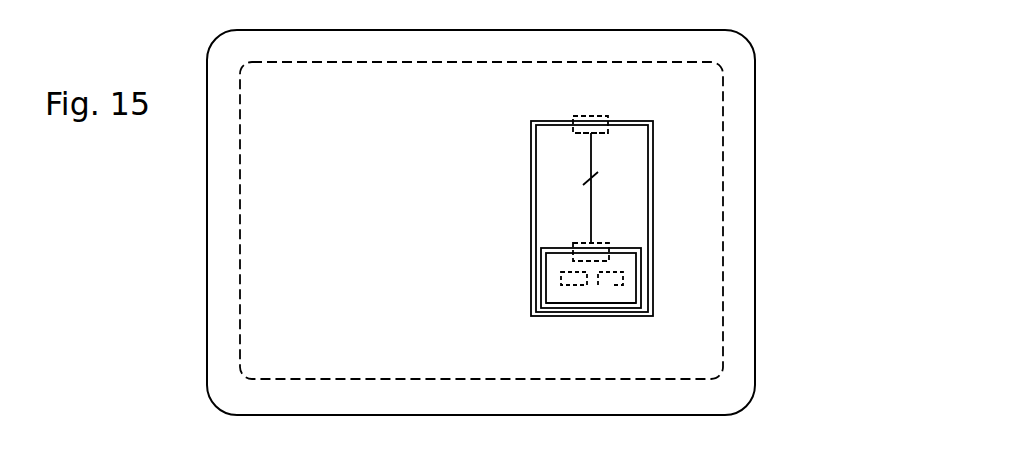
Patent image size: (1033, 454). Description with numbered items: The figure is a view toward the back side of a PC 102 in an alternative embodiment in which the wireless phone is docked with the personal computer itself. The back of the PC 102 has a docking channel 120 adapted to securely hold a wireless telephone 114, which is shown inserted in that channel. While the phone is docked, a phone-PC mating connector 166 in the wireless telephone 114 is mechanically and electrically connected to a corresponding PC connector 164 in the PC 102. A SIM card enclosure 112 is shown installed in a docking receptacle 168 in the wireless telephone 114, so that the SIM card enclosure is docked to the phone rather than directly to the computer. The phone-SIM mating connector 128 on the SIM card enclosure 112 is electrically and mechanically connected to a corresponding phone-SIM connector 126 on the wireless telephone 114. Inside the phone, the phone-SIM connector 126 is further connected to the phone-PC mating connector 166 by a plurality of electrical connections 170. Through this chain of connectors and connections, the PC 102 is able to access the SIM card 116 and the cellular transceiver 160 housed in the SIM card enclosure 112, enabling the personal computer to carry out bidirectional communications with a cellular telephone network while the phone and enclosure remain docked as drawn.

The PC 102 is at (380, 30).
The wireless telephone 114 is at (630, 125).
The docking channel 120 is at (530, 237).
The PC connector 164 is at (590, 115).
The phone-PC mating connector 166 is at (577, 137).
The electrical connections 170 is at (592, 163).
The phone-SIM connector 126 is at (608, 245).
The docking receptacle 168 is at (625, 247).
The SIM card enclosure 112 is at (602, 305).
The phone-SIM mating connector 128 is at (573, 260).
The cellular transceiver 160 is at (573, 287).
The SIM card 116 is at (612, 287).